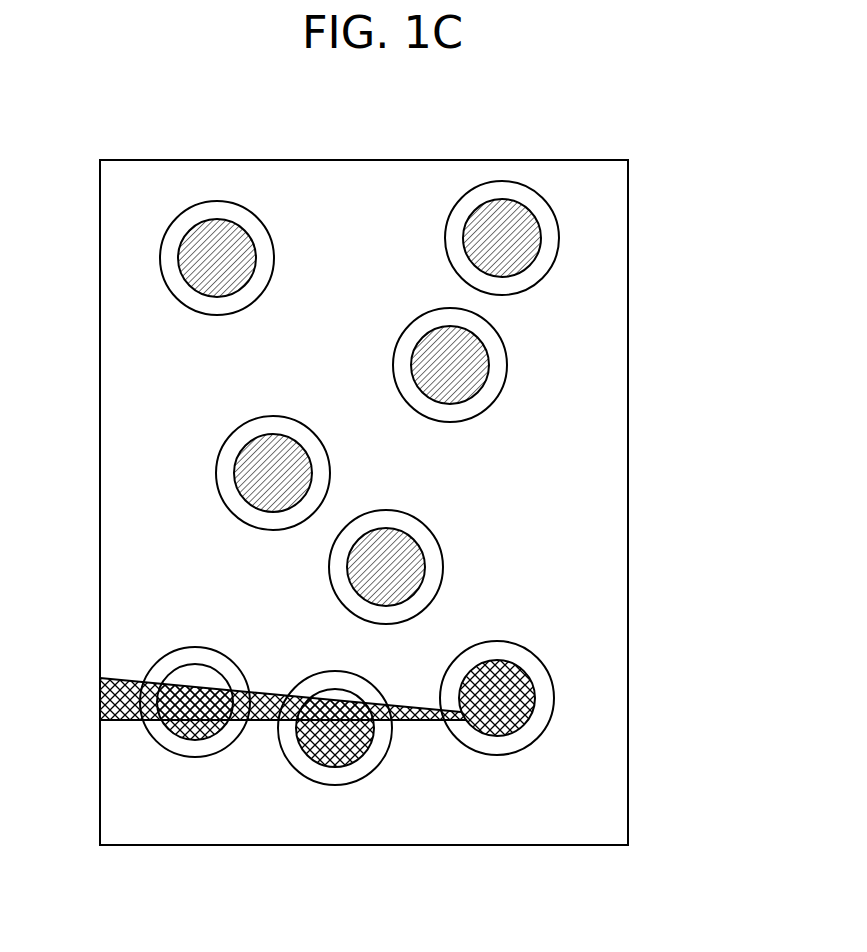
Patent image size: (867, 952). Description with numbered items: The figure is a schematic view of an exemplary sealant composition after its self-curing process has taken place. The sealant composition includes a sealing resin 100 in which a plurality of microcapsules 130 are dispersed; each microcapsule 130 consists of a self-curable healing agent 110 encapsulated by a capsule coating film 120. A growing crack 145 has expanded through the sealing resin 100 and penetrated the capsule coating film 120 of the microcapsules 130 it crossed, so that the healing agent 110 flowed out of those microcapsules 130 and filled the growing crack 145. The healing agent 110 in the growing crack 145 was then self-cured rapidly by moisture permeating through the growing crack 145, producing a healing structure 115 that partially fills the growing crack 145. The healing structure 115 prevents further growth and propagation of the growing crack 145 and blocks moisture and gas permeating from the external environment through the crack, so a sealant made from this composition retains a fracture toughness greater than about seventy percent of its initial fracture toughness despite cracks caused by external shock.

The sealing resin 100 is at (598, 490).
The self-curable healing agent 110 is at (407, 575).
The capsule coating film 120 is at (423, 537).
The microcapsule 130 is at (553, 567).
The growing crack 145 is at (118, 688).
The healing structure 115 is at (350, 760).